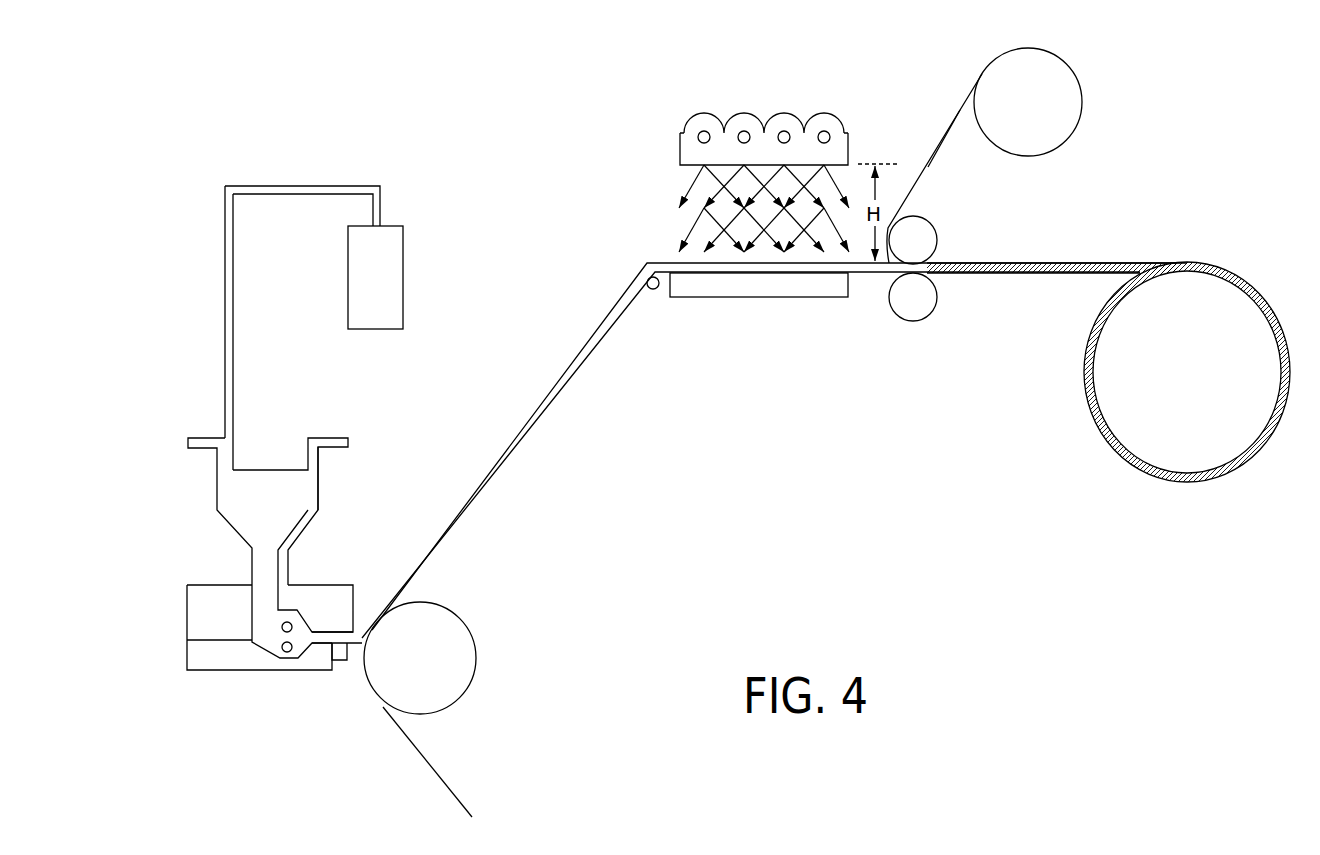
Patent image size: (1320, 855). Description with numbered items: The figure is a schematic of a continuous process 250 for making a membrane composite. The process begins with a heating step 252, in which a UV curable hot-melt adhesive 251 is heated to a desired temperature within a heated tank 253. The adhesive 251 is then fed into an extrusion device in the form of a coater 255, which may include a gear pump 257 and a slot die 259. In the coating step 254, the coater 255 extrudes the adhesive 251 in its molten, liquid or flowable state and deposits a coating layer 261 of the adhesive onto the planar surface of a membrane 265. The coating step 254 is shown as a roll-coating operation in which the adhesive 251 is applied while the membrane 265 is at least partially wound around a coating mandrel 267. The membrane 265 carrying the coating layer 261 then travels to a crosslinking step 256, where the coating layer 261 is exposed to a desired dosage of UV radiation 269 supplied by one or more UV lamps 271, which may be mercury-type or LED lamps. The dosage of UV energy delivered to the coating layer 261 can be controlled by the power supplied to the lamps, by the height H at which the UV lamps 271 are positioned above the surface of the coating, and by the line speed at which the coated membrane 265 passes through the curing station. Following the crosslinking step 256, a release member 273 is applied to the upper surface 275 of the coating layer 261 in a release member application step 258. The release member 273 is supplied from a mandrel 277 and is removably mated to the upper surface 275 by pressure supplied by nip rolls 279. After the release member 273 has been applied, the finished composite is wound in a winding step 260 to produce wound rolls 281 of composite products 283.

The continuous process 250 is at (603, 125).
The UV curable hot-melt adhesive 251 is at (283, 478).
The heating step 252 is at (402, 473).
The heated tank 253 is at (308, 527).
The coating step 254 is at (333, 703).
The coater 255 is at (205, 670).
The crosslinking step 256 is at (657, 148).
The gear pump 257 is at (287, 653).
The release member application step 258 is at (942, 108).
The slot die 259 is at (325, 630).
The winding step 260 is at (1090, 428).
The coating layer 261 is at (447, 518).
The membrane 265 is at (433, 770).
The coating mandrel 267 is at (462, 615).
The UV radiation 269 is at (693, 222).
The UV lamps 271 is at (785, 112).
The release member 273 is at (928, 167).
The upper surface 275 is at (887, 230).
The mandrel 277 is at (1082, 80).
The nip rolls 279 is at (896, 322).
The wound rolls 281 is at (1172, 483).
The composite products 283 is at (1050, 263).